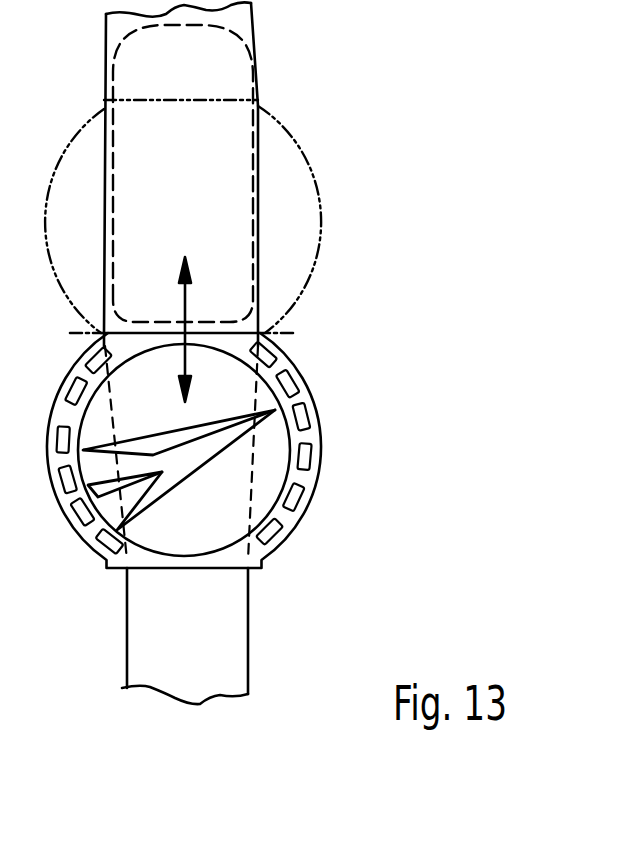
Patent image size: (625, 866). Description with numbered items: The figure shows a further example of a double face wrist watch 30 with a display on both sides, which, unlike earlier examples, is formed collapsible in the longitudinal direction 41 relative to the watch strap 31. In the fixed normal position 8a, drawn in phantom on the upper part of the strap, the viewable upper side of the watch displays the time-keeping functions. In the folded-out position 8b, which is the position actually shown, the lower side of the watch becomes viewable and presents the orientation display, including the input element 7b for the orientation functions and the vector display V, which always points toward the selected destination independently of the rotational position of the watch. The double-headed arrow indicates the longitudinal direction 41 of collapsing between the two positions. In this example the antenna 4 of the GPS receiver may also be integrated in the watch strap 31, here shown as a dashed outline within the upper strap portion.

The double face wrist watch 30 is at (248, 14).
The watch strap 31 is at (157, 613).
The antenna 4 is at (113, 198).
The longitudinal direction 41 is at (187, 298).
The normal position 8a is at (303, 163).
The folded-out position 8b is at (270, 513).
The input element 7b is at (302, 413).
The vector display V is at (190, 457).